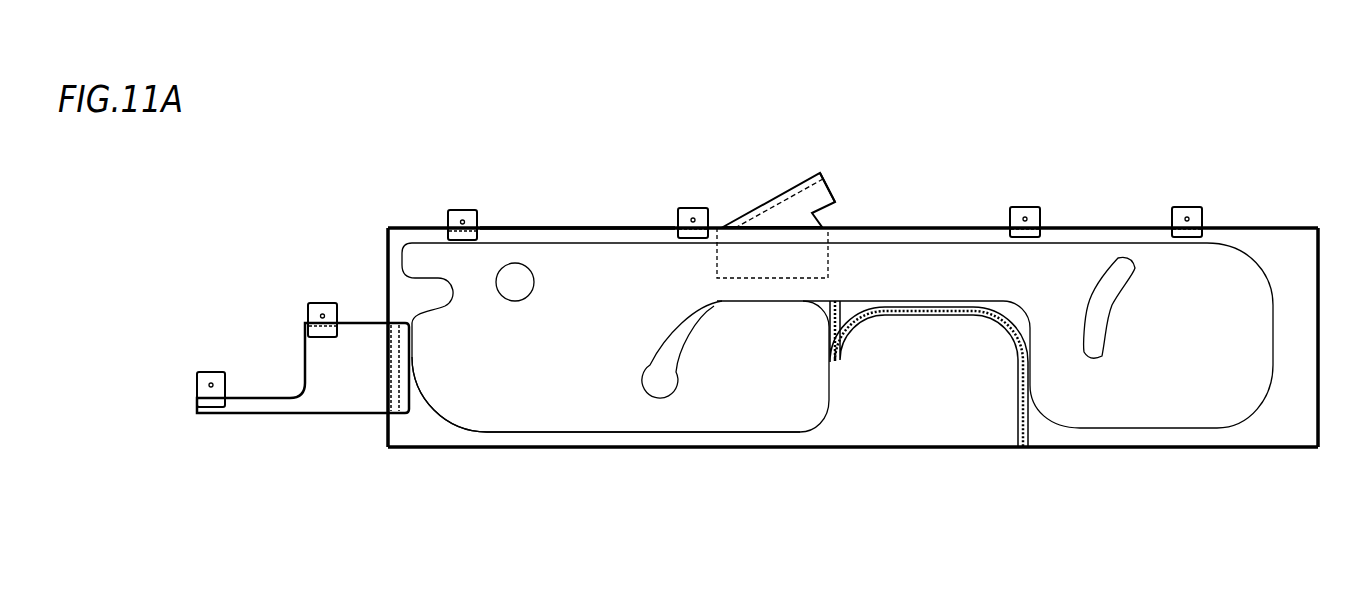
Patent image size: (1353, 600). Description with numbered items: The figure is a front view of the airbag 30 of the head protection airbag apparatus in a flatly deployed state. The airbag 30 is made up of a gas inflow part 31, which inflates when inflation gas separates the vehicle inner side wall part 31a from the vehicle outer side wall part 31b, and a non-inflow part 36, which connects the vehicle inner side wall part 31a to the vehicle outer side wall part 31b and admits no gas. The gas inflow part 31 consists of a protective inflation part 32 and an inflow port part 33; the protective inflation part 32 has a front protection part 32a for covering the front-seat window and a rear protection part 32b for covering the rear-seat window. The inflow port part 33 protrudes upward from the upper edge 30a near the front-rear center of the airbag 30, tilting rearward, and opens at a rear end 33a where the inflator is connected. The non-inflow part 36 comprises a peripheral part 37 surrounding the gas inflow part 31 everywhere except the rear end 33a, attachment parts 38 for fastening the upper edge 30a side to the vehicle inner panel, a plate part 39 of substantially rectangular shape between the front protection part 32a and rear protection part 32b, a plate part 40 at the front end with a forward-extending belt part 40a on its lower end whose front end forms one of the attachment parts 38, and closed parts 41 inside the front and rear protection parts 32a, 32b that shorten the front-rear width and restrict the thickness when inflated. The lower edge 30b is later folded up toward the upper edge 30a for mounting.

The airbag 30 is at (853, 313).
The upper edge 30a is at (1107, 228).
The lower edge 30b is at (1070, 440).
The gas inflow part 31 is at (837, 328).
The vehicle inner side wall part 31a is at (457, 407).
The vehicle outer side wall part 31b is at (477, 403).
The protective inflation part 32 is at (837, 403).
The front protection part 32a is at (595, 405).
The rear protection part 32b is at (1160, 400).
The inflow port part 33 is at (839, 185).
The rear end 33a is at (826, 183).
The non-inflow part 36 is at (757, 313).
The peripheral part 37 is at (563, 227).
The attachment parts 38 is at (462, 208).
The plate part 39 is at (918, 435).
The plate part 40 is at (303, 416).
The belt part 40a is at (253, 407).
The closed parts 41 is at (515, 293).